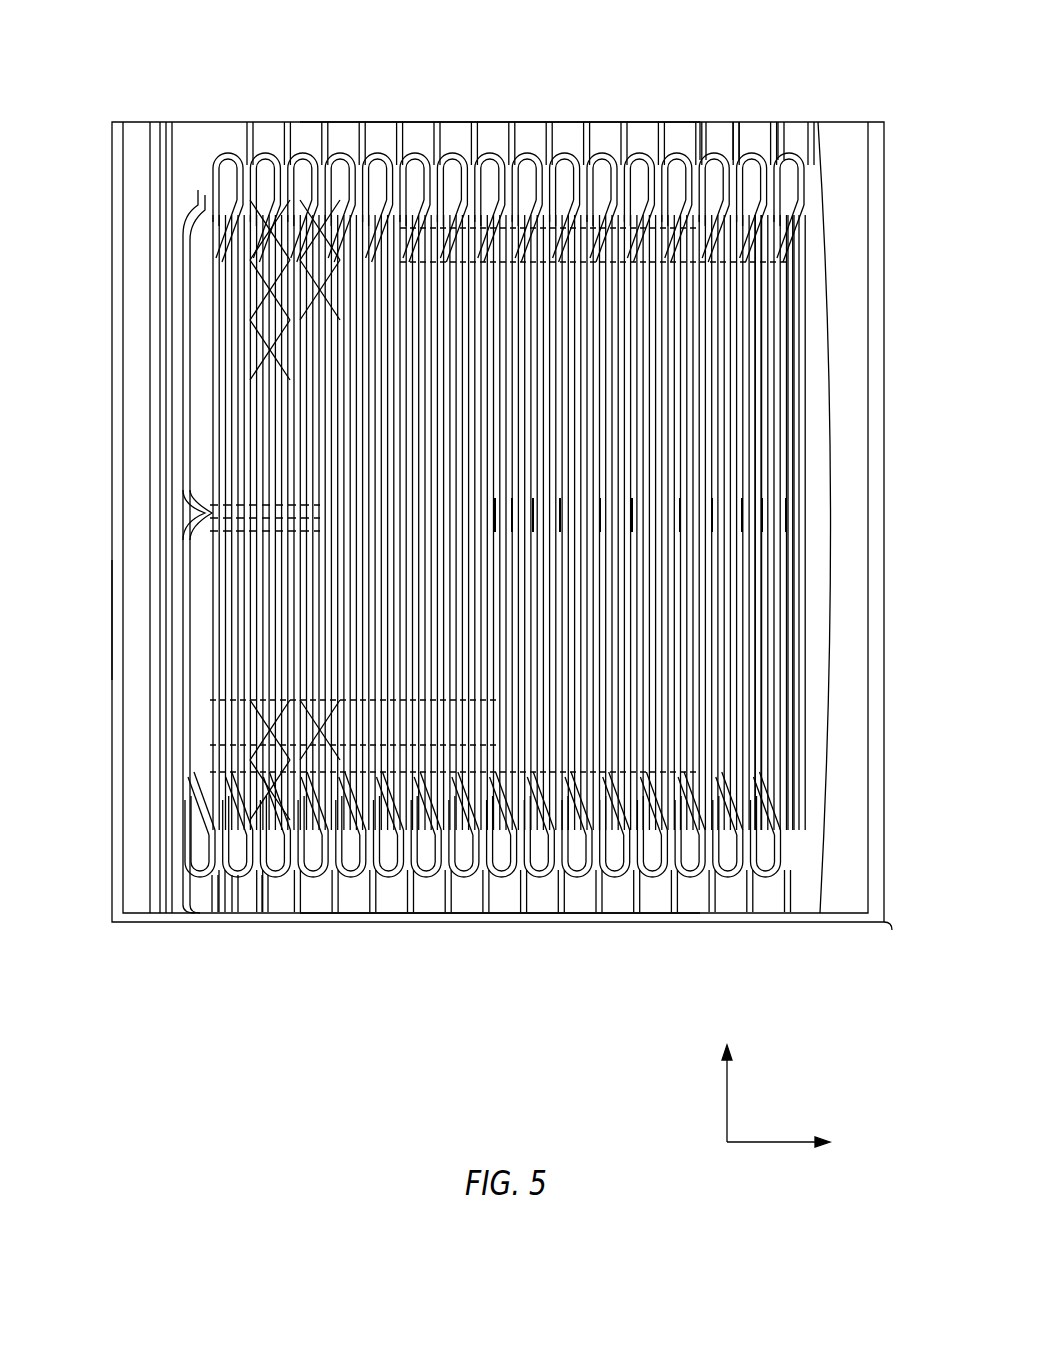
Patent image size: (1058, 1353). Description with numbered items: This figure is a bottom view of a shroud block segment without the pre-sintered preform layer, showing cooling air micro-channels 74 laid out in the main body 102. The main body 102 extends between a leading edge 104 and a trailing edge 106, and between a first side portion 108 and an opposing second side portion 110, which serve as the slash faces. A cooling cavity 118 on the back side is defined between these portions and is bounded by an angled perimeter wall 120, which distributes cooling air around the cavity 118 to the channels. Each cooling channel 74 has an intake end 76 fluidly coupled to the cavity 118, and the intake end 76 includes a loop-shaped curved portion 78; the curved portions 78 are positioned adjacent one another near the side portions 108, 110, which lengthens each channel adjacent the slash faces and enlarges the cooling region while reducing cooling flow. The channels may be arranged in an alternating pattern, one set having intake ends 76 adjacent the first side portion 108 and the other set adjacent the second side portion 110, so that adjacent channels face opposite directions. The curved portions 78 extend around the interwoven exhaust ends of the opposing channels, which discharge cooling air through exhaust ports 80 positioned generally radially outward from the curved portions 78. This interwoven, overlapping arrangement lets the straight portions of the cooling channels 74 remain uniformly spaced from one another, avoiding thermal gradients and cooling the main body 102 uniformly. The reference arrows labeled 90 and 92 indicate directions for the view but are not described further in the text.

The cooling channel 74 is at (188, 463).
The intake end 76 is at (705, 272).
The curved portion 78 is at (640, 122).
The exhaust port 80 is at (778, 122).
The first direction 90 is at (722, 1093).
The second direction 92 is at (795, 1140).
The main body 102 is at (889, 922).
The leading edge 104 is at (112, 613).
The trailing edge 106 is at (888, 551).
The first side portion 108 is at (690, 926).
The second side portion 110 is at (541, 122).
The cavity 118 is at (640, 528).
The angled perimeter wall 120 is at (315, 395).